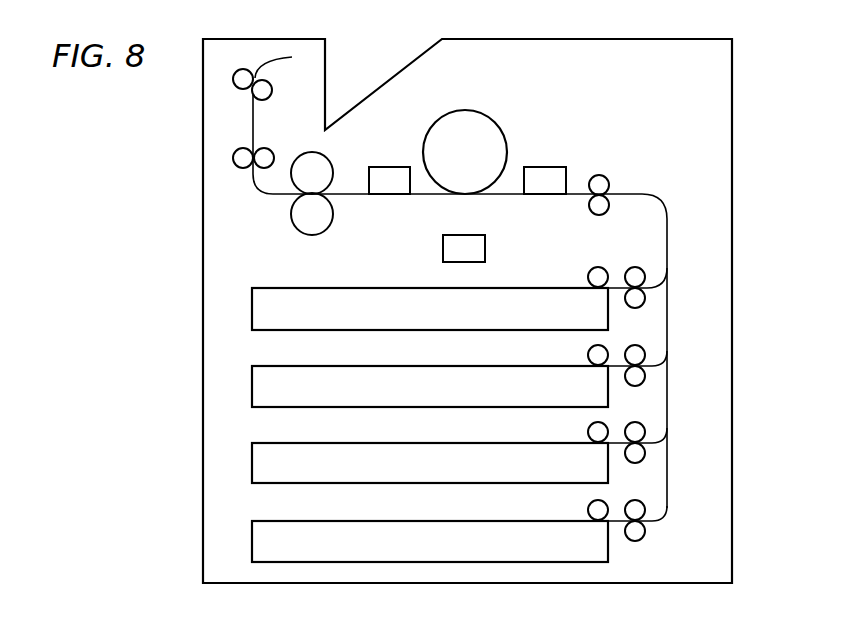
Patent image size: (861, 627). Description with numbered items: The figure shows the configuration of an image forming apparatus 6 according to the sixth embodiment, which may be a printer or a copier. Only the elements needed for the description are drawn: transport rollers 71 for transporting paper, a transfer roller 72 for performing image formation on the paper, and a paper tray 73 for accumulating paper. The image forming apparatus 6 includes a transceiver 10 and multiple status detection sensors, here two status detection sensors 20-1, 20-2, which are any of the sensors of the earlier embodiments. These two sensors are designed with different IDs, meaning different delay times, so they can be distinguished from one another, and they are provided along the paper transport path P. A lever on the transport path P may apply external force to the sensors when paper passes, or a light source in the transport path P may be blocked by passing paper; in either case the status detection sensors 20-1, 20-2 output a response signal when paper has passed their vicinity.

The image forming apparatus 6 is at (732, 160).
The transport path P is at (645, 194).
The transport rollers 71 is at (270, 97).
The transfer roller 72 is at (471, 110).
The status detection sensor 20-1 is at (381, 167).
The status detection sensor 20-2 is at (545, 167).
The transceiver 10 is at (485, 242).
The paper tray 73 is at (252, 306).